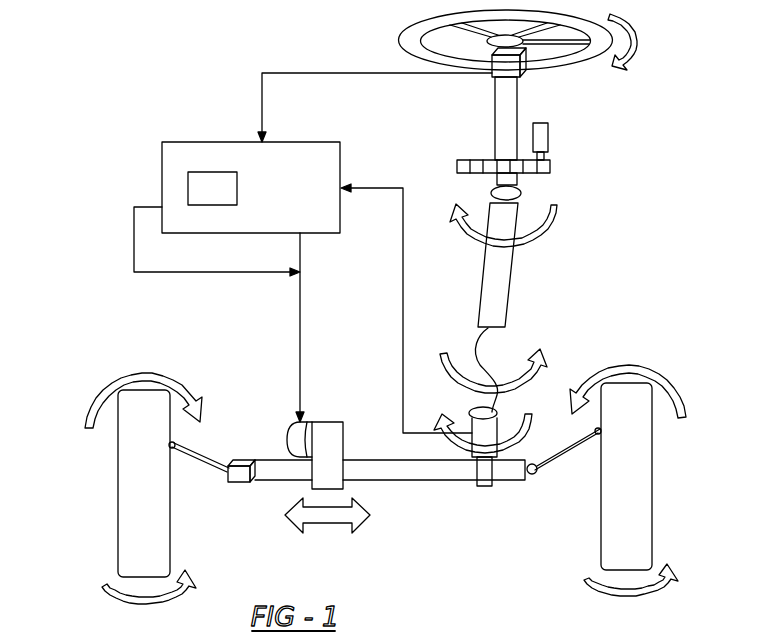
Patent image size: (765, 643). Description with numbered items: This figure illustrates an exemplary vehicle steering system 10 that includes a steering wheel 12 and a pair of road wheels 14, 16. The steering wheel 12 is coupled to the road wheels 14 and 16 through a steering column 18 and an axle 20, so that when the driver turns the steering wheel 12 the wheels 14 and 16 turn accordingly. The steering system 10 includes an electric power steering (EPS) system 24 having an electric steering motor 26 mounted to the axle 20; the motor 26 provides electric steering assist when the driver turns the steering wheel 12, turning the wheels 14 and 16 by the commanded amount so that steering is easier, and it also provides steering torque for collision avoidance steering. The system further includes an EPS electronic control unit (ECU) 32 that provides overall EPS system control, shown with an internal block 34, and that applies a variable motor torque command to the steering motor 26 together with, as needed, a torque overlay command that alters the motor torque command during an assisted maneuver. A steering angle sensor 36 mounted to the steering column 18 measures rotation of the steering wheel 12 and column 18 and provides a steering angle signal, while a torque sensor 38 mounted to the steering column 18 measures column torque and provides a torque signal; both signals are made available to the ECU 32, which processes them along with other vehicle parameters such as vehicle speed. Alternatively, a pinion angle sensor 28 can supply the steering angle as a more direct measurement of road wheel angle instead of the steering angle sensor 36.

The vehicle steering system 10 is at (124, 32).
The steering wheel 12 is at (420, 27).
The road wheel 14 is at (127, 480).
The road wheel 16 is at (638, 503).
The steering column 18 is at (495, 125).
The axle 20 is at (428, 480).
The electric power steering (EPS) system 24 is at (270, 399).
The electric steering motor 26 is at (298, 448).
The pinion angle (PA) sensor 28 is at (488, 487).
The EPS electronic control unit (ECU) 32 is at (202, 140).
The control module 34 is at (202, 200).
The steering angle sensor 36 is at (513, 67).
The torque sensor 38 is at (475, 412).